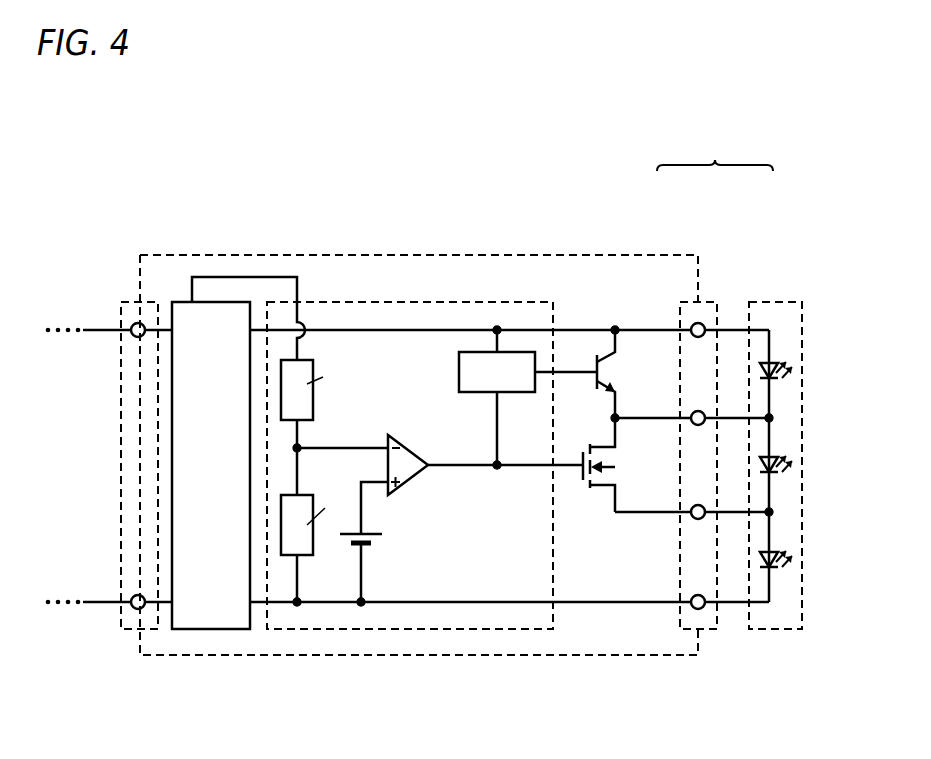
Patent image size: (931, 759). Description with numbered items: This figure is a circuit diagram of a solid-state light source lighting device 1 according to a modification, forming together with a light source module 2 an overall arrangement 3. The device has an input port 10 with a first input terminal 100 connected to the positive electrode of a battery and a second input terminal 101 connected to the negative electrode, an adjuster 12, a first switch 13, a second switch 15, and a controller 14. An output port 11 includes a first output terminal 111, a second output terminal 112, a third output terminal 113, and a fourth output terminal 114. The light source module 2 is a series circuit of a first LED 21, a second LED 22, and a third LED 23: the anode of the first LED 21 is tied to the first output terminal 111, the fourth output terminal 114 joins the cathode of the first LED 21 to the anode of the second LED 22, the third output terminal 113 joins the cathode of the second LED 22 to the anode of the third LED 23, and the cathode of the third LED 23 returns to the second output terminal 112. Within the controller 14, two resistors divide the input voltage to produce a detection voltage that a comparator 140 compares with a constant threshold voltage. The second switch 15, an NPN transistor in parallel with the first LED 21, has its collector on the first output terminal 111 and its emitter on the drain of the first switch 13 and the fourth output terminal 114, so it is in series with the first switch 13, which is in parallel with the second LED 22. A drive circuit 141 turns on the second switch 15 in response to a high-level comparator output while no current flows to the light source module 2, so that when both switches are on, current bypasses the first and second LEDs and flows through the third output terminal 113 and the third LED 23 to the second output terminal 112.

The solid-state light source lighting device 1 is at (648, 253).
The light source module 2 is at (768, 300).
The lighting system 3 is at (723, 156).
The input port 10 is at (122, 299).
The output port 11 is at (713, 300).
The adjuster 12 is at (203, 632).
The first switch 13 is at (587, 487).
The controller 14 is at (338, 631).
The second switch 15 is at (590, 380).
The first LED 21 is at (784, 383).
The second LED 22 is at (784, 477).
The third LED 23 is at (784, 572).
The first input terminal 100 is at (133, 325).
The second input terminal 101 is at (133, 607).
The first output terminal 111 is at (692, 323).
The second output terminal 112 is at (692, 608).
The third output terminal 113 is at (692, 517).
The fourth output terminal 114 is at (692, 411).
The comparator 140 is at (407, 458).
The drive circuit 141 is at (470, 373).